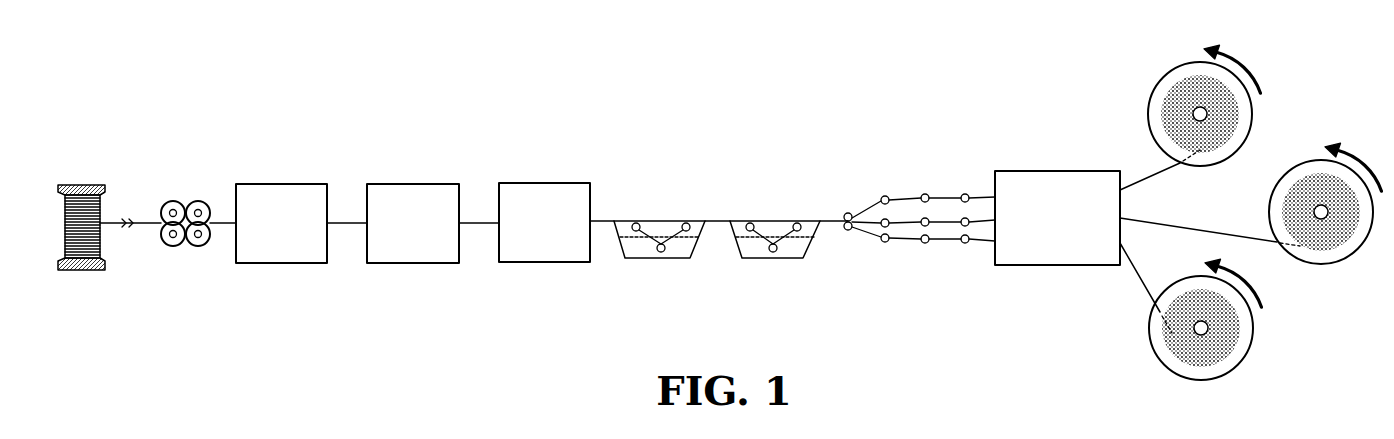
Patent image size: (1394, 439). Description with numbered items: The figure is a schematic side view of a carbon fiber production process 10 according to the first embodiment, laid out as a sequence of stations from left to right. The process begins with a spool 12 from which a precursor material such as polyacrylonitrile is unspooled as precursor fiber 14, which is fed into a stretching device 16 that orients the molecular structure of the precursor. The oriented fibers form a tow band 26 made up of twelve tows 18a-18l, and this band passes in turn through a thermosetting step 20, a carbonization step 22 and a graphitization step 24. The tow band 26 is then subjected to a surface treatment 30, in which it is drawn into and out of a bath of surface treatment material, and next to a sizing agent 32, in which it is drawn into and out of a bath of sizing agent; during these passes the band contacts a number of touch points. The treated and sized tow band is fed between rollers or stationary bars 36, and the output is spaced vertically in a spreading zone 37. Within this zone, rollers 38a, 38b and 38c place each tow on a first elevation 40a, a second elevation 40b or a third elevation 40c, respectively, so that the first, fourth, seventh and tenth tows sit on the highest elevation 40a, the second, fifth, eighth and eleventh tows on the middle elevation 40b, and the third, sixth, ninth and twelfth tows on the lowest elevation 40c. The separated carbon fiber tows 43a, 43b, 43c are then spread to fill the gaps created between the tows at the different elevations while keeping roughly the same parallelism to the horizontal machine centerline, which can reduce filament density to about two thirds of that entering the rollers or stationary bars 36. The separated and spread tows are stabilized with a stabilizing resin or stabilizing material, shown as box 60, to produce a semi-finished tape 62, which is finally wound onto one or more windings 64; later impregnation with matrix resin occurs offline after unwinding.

The carbon fiber production process 10 is at (167, 68).
The spool 12 is at (80, 185).
The precursor fiber 14 is at (110, 226).
The stretching device 16 is at (234, 234).
The tows 18a-18l is at (218, 224).
The thermosetting step 20 is at (283, 184).
The carbonization step 22 is at (413, 184).
The graphitization step 24 is at (543, 183).
The tow band 26 is at (603, 220).
The surface treatment 30 is at (640, 248).
The sizing agent 32 is at (757, 248).
The rollers or stationary bars 36 is at (845, 214).
The spreading zone 37 is at (927, 191).
The roller 38a is at (882, 196).
The roller 38b is at (882, 228).
The roller 38c is at (886, 243).
The separated carbon fiber tow 43a is at (912, 195).
The separated carbon fiber tow 43b is at (912, 218).
The separated carbon fiber tow 43c is at (908, 242).
The first elevation 40a is at (1000, 195).
The second elevation 40b is at (1000, 212).
The third elevation 40c is at (1000, 243).
The stabilizing step 60 is at (1075, 171).
The semi-finished tape 62 is at (1138, 285).
The windings 64 is at (1164, 76).